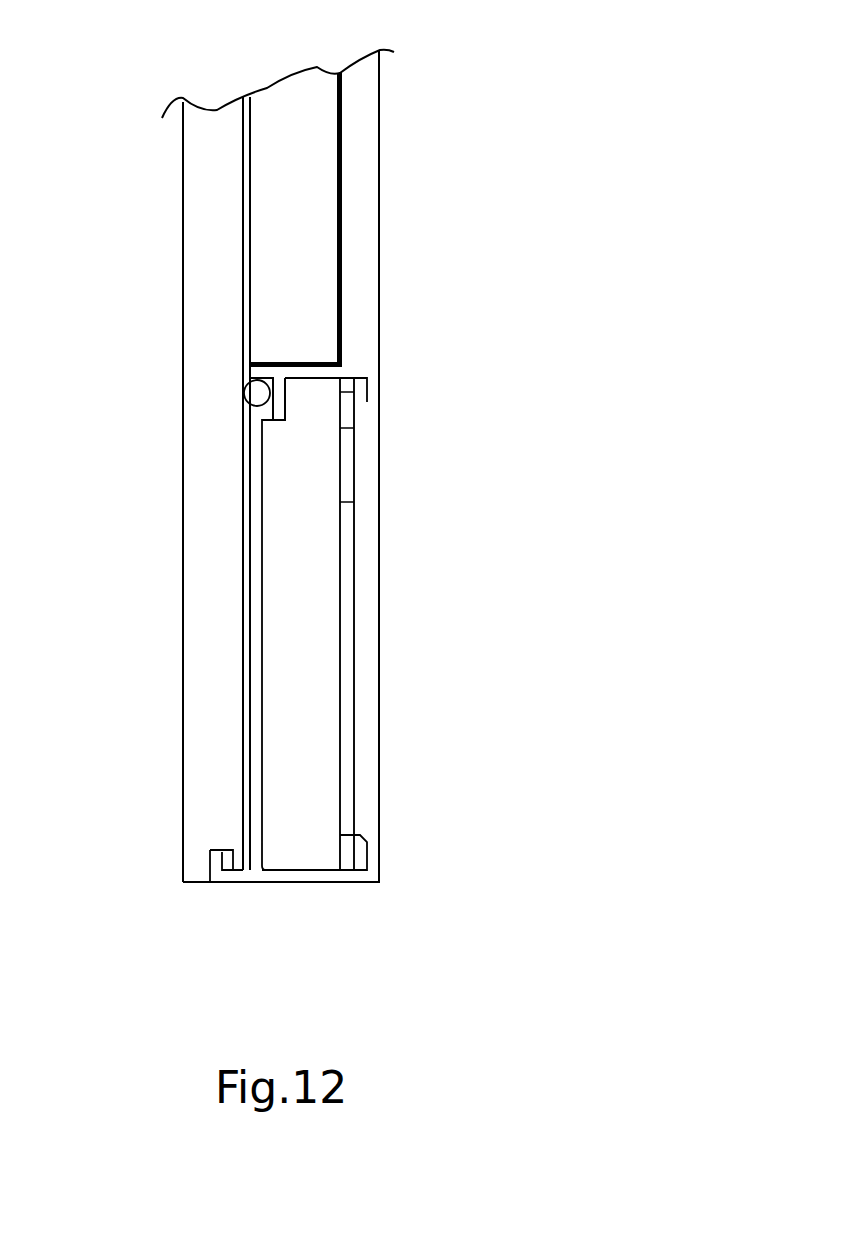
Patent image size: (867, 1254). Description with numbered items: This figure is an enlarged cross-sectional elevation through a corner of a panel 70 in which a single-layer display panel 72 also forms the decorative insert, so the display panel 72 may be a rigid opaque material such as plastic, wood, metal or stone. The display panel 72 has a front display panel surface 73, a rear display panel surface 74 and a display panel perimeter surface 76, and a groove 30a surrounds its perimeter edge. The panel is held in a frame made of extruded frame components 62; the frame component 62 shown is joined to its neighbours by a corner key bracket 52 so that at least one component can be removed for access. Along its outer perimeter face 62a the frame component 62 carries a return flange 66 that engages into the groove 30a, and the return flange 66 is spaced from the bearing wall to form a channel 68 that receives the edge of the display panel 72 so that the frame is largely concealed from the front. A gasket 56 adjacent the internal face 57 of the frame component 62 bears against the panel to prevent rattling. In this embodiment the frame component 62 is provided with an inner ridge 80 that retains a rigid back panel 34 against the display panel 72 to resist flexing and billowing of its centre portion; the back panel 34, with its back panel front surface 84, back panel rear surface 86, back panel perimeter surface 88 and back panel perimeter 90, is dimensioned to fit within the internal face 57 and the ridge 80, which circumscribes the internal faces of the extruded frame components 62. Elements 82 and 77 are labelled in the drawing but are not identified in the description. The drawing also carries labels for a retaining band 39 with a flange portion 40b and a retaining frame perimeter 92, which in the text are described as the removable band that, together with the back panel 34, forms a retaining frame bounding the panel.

The panel 70 is at (421, 101).
The display panel 72 is at (210, 775).
The front display panel surface 73 is at (183, 265).
The rear display panel surface 74 is at (243, 193).
The panel wall 82 is at (250, 112).
The back panel front surface 84 is at (253, 167).
The frame component 62 is at (357, 173).
The outer perimeter face 62a is at (273, 884).
The corner key bracket 52 is at (347, 484).
The back panel 34 is at (330, 230).
The inner ridge 80 is at (355, 322).
The back panel rear surface 86 is at (340, 243).
The back panel perimeter surface 88 is at (340, 338).
The back panel perimeter 90 is at (300, 352).
The gasket 56 is at (257, 393).
The internal face 57 is at (303, 368).
The channel 68 is at (232, 868).
The return flange 66 is at (207, 865).
The groove 30a is at (217, 847).
The display panel perimeter surface 76 is at (183, 887).
The lower lip 77 is at (202, 887).
The flange portion 40b is at (228, 888).
The retaining band 39 is at (327, 885).
The retaining frame perimeter 92 is at (375, 885).